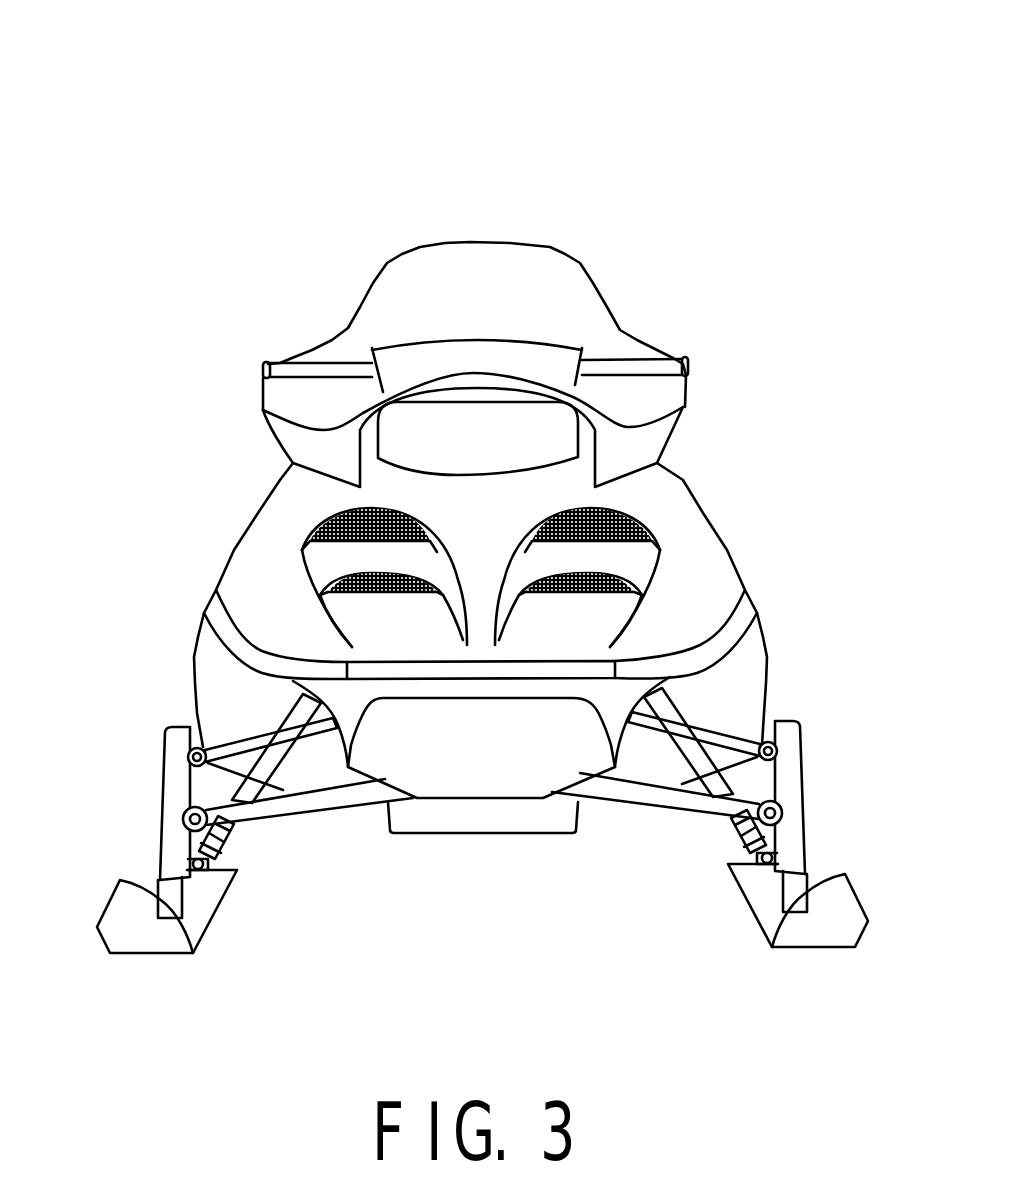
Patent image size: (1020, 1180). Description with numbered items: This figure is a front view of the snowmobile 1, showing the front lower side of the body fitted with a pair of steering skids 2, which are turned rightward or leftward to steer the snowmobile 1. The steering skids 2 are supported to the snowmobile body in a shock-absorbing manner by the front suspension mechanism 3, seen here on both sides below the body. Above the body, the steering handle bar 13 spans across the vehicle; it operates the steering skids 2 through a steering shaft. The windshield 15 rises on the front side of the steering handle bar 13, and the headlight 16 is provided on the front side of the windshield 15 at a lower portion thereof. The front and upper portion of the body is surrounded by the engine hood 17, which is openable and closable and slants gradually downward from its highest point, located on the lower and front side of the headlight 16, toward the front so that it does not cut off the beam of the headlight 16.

The snowmobile 1 is at (499, 108).
The steering skids 2 is at (120, 915).
The front suspension mechanism 3 is at (272, 765).
The steering handle bar 13 is at (628, 368).
The windshield 15 is at (372, 300).
The headlight 16 is at (403, 447).
The engine hood 17 is at (670, 490).